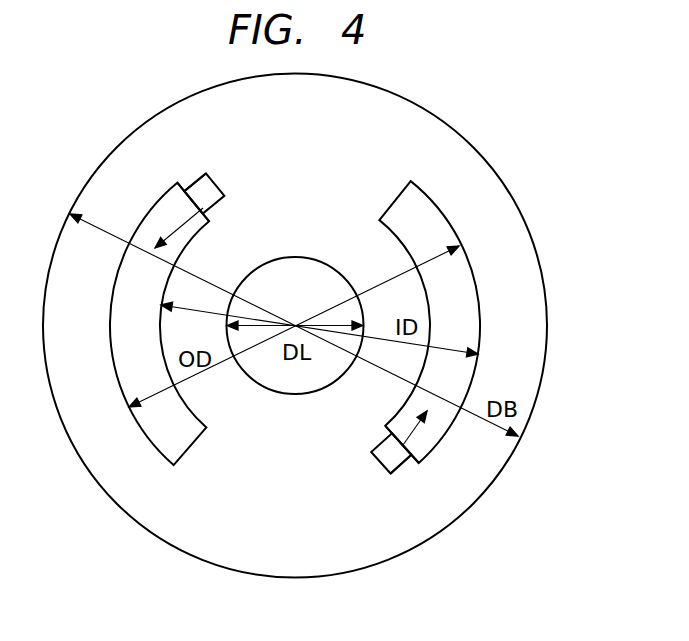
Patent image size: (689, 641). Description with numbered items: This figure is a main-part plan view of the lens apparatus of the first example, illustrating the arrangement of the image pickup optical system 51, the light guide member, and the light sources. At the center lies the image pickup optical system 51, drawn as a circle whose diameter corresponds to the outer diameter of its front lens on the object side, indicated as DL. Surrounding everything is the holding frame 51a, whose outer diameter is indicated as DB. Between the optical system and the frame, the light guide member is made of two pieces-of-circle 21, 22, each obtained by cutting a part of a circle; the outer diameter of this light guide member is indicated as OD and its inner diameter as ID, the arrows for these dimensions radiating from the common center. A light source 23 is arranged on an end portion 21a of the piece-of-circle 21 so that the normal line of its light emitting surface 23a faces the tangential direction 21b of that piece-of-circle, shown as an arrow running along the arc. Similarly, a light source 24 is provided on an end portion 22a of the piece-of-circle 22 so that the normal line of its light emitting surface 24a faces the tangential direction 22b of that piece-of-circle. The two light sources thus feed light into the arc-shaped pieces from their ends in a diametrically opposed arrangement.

The image pickup optical system 51 is at (312, 266).
The holding frame 51a is at (483, 155).
The piece-of-circle 21 is at (458, 368).
The end portion 21a is at (383, 430).
The tangential direction 21b is at (413, 432).
The piece-of-circle 22 is at (170, 442).
The end portion 22a is at (187, 181).
The tangential direction 22b is at (176, 228).
The light source 23 is at (380, 461).
The light emitting surface 23a is at (409, 452).
The light source 24 is at (218, 190).
The light emitting surface 24a is at (205, 207).